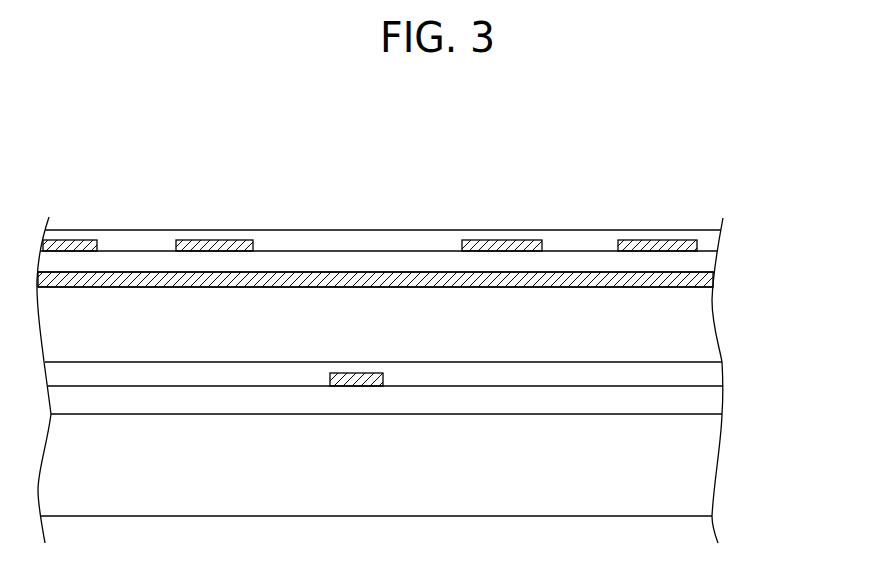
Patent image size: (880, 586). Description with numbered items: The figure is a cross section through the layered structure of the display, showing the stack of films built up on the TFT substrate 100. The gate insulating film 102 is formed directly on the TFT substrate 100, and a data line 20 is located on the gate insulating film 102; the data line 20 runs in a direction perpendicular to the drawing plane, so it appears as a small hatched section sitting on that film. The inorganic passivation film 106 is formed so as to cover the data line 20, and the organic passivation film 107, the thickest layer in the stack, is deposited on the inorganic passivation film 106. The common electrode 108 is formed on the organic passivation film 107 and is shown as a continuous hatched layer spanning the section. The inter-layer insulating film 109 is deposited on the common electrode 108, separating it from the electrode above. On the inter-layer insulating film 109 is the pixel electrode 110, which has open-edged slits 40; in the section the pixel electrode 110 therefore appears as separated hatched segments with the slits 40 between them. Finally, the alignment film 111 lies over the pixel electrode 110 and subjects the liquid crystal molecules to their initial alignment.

The data line 20 is at (358, 386).
The open-edged slits 40 is at (590, 247).
The TFT substrate 100 is at (693, 496).
The gate insulating film 102 is at (705, 400).
The inorganic passivation film 106 is at (705, 376).
The organic passivation film 107 is at (697, 330).
The common electrode 108 is at (358, 278).
The inter-layer insulating film 109 is at (700, 263).
The pixel electrode 110 is at (658, 248).
The alignment film 111 is at (512, 236).